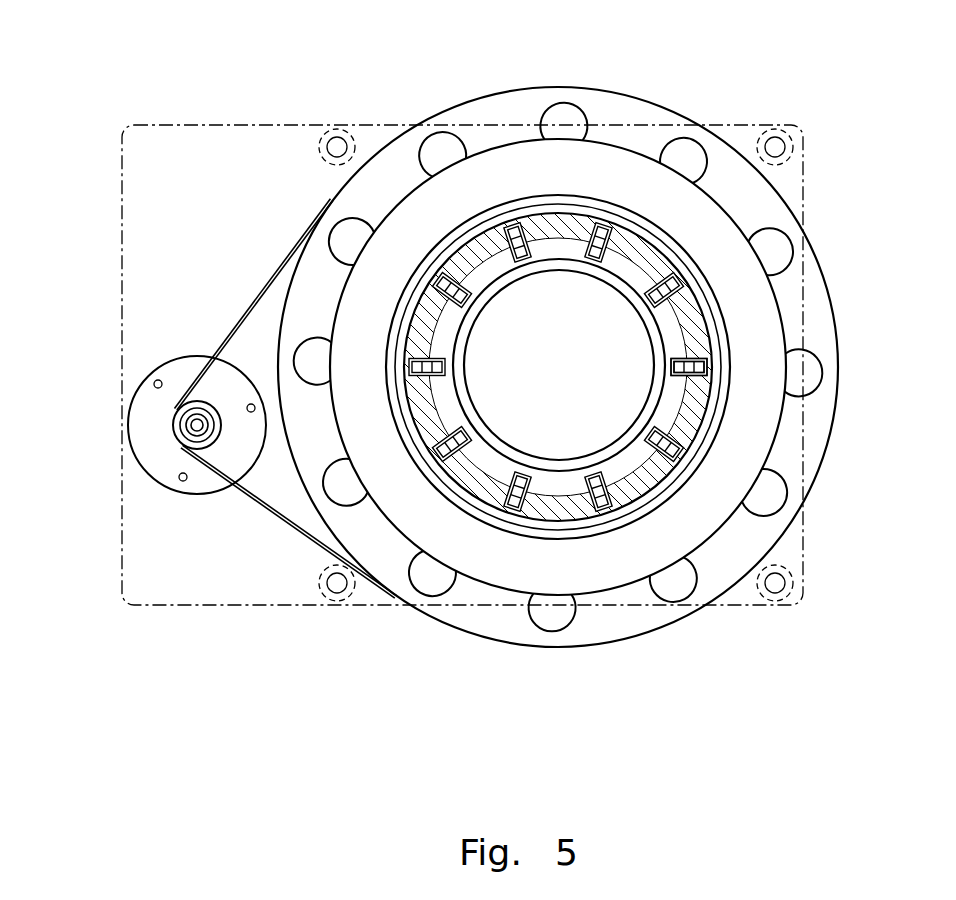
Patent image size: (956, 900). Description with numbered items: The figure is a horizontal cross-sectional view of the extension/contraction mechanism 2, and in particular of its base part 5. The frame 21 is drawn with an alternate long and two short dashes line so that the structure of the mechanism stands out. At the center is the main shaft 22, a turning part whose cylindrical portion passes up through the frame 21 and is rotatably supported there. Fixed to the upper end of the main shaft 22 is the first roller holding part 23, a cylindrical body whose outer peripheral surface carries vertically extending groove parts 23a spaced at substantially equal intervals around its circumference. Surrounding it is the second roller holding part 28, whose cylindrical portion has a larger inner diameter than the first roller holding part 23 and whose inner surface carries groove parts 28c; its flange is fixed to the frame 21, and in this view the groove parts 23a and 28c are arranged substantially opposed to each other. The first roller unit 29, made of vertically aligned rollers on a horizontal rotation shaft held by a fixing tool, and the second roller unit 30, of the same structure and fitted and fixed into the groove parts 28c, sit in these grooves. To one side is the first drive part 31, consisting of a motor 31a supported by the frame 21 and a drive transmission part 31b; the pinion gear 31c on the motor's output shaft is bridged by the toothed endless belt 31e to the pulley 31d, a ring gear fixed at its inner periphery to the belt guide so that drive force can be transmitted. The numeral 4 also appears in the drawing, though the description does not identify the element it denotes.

The extension/contraction mechanism 2 is at (873, 66).
The electric motor 4 is at (555, 232).
The base part 5 is at (829, 228).
The frame 21 is at (220, 157).
The main shaft 22 is at (493, 412).
The first roller holding part 23 is at (456, 377).
The groove parts 23a is at (447, 372).
The second roller holding part 28 is at (708, 410).
The groove parts 28c is at (688, 448).
The first roller unit 29 is at (685, 365).
The second roller unit 30 is at (709, 362).
The first drive part 31 is at (160, 358).
The motor 31a is at (148, 425).
The drive transmission part 31b is at (245, 508).
The pinion gear 31c is at (183, 408).
The pulley 31d is at (522, 625).
The belt 31e is at (303, 528).